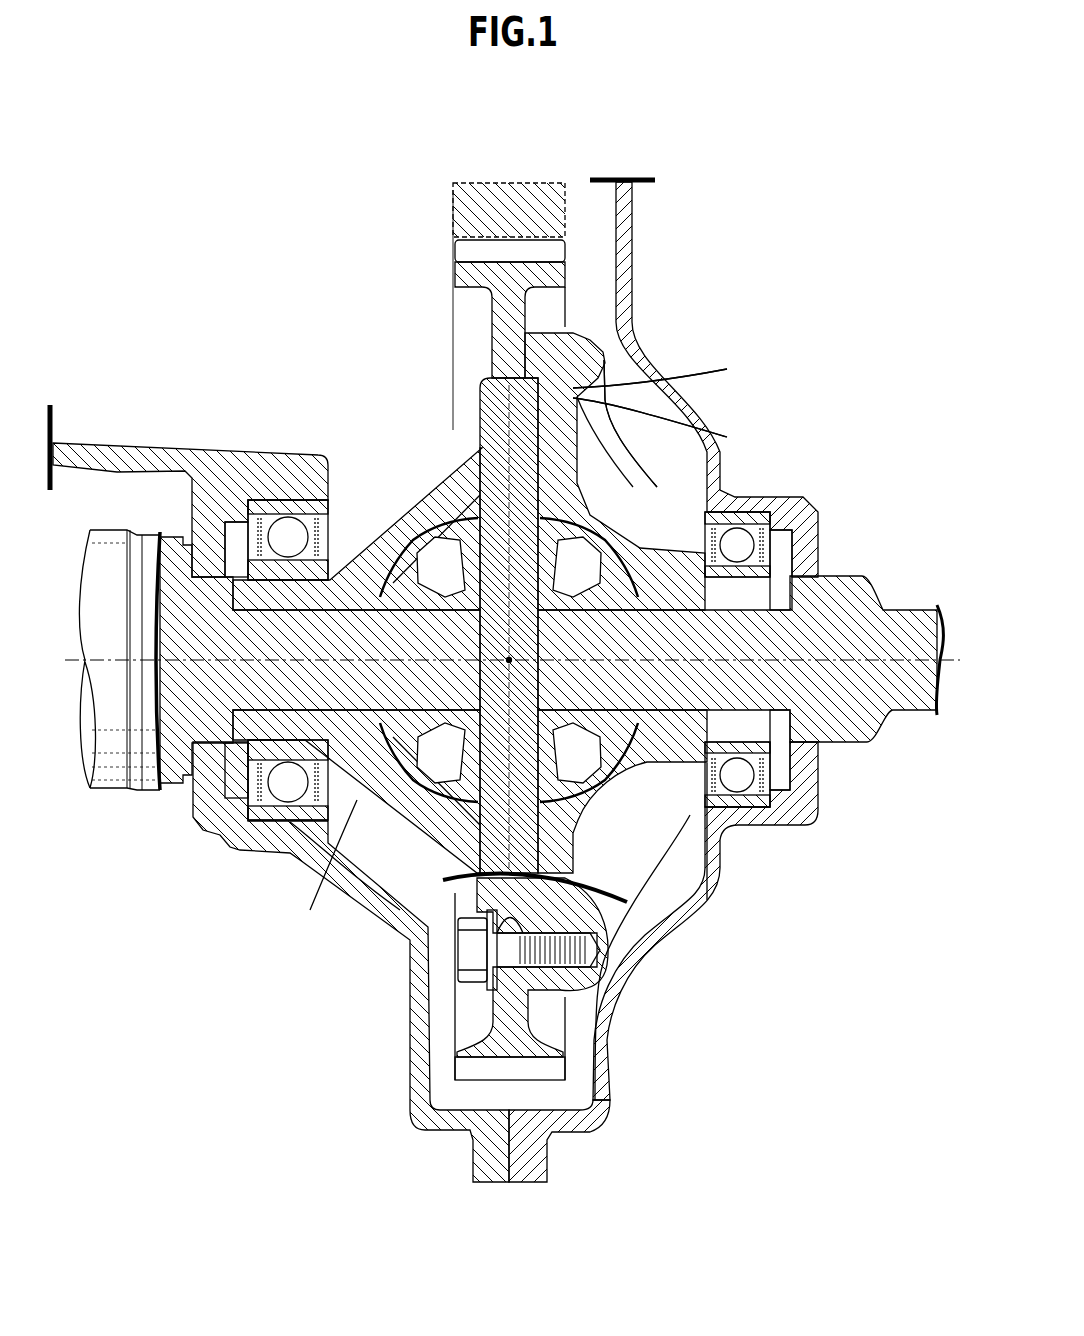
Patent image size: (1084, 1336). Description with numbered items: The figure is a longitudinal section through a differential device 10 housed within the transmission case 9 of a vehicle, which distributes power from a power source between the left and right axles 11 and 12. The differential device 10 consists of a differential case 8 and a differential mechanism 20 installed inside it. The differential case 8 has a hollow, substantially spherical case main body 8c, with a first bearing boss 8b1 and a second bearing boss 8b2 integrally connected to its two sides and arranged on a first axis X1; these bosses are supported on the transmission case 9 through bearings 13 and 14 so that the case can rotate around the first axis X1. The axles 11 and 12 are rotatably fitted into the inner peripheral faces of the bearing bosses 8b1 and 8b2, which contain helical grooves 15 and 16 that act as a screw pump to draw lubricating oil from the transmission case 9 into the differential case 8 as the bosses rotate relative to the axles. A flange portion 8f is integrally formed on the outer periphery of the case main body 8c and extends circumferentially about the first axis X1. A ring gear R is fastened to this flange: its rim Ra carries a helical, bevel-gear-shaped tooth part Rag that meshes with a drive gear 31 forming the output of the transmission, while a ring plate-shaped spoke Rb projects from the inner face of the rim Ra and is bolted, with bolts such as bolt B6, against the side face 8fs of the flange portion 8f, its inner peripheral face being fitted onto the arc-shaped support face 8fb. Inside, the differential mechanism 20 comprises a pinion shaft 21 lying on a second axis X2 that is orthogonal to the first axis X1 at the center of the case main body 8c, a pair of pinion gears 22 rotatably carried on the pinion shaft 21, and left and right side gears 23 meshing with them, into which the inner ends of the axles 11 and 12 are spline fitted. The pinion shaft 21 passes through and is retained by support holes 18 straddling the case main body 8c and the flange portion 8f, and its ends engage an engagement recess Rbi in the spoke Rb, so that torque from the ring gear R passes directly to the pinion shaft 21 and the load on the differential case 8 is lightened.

The differential case 8 is at (403, 517).
The first bearing boss 8b1 is at (340, 867).
The second bearing boss 8b2 is at (722, 866).
The case main body 8c is at (603, 790).
The flange portion 8f is at (578, 325).
The arc-shaped support face 8fb is at (575, 870).
The side face 8fs is at (570, 1017).
The transmission case 9 is at (197, 833).
The differential device 10 is at (368, 383).
The left axle 11 is at (115, 783).
The right axle 12 is at (895, 716).
The bearing 13 is at (280, 500).
The bearing 14 is at (767, 490).
The helical groove 15 is at (270, 612).
The helical groove 16 is at (690, 608).
The support hole 18 is at (480, 445).
The differential mechanism 20 is at (768, 365).
The pinion shaft 21 is at (610, 387).
The pinion gear 22 is at (627, 407).
The side gear 23 is at (663, 423).
The drive gear 31 is at (458, 222).
The tooth part Rag is at (453, 244).
The engagement recess Rbi is at (480, 397).
The ring gear R is at (332, 1020).
The rim Ra is at (455, 1065).
The spoke Rb is at (495, 1005).
The bolt B6 is at (457, 953).
The first axis X1 is at (882, 658).
The second axis X2 is at (575, 358).